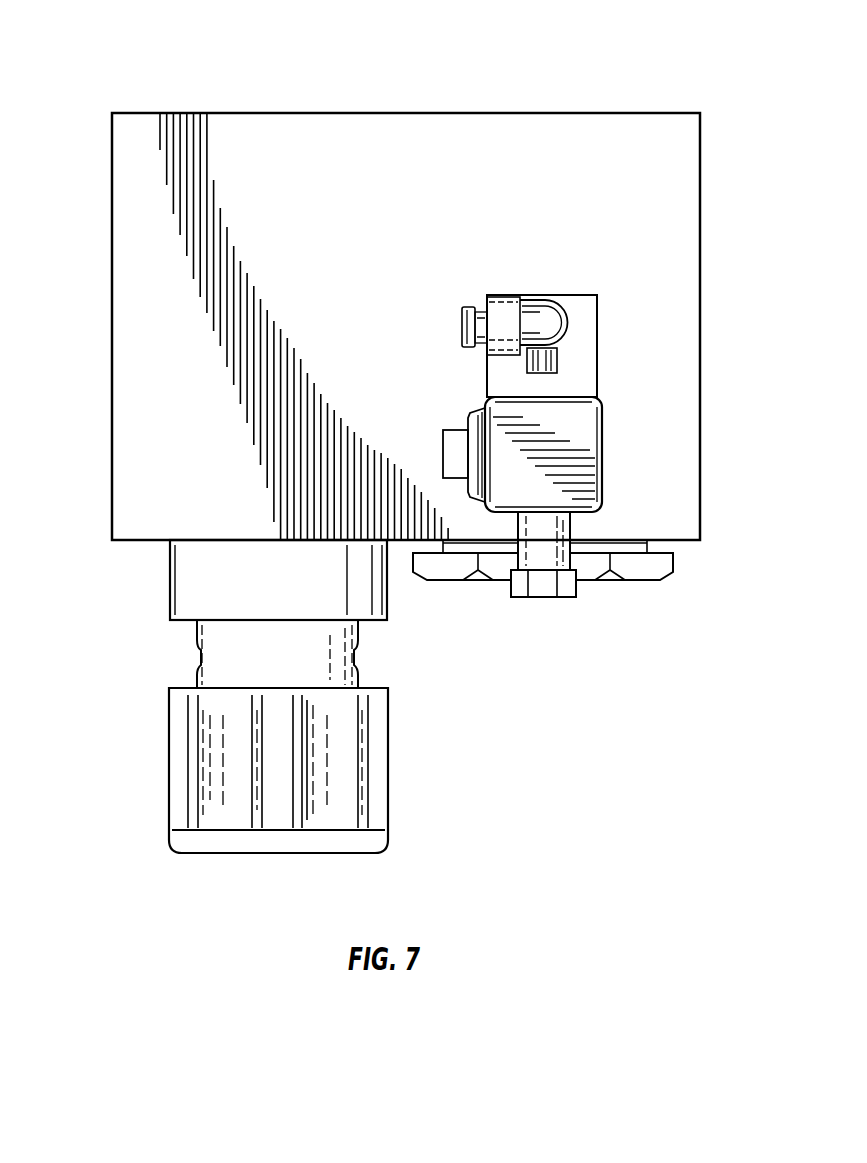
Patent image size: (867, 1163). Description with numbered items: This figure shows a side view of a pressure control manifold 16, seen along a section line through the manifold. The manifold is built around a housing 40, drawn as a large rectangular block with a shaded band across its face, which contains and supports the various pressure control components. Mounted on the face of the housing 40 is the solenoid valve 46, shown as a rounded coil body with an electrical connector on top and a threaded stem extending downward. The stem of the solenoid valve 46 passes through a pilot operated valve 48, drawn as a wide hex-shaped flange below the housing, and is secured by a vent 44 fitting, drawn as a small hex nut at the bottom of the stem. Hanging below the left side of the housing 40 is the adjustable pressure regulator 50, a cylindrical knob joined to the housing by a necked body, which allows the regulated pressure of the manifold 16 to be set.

The pressure control manifold 16 is at (106, 47).
The housing 40 is at (700, 313).
The vent 44 is at (543, 597).
The solenoid valve 46 is at (603, 455).
The pilot operated valve 48 is at (640, 580).
The adjustable pressure regulator 50 is at (388, 765).